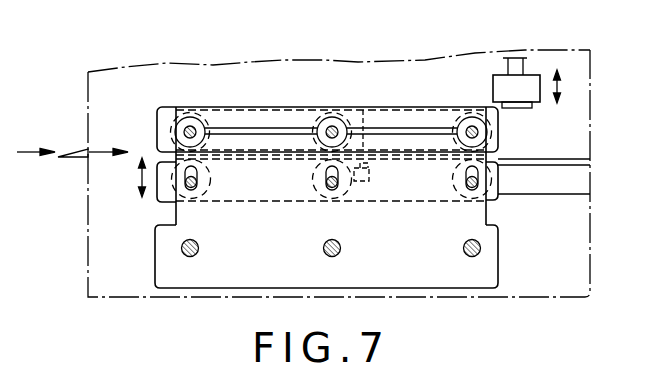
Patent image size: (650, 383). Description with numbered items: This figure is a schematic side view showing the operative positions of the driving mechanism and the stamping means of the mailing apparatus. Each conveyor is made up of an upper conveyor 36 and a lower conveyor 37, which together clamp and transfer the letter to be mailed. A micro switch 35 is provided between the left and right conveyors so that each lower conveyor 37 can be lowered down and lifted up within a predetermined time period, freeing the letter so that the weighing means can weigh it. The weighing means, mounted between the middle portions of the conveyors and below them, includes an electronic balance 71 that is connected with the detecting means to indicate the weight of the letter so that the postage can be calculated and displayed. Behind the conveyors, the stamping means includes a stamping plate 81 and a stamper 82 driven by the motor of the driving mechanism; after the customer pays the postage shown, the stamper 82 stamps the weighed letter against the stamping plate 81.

The micro switch 35 is at (368, 163).
The upper conveyor 36 is at (157, 134).
The lower conveyor 37 is at (157, 202).
The electronic balance 71 is at (250, 152).
The stamping plate 81 is at (540, 158).
The stamper 82 is at (527, 73).